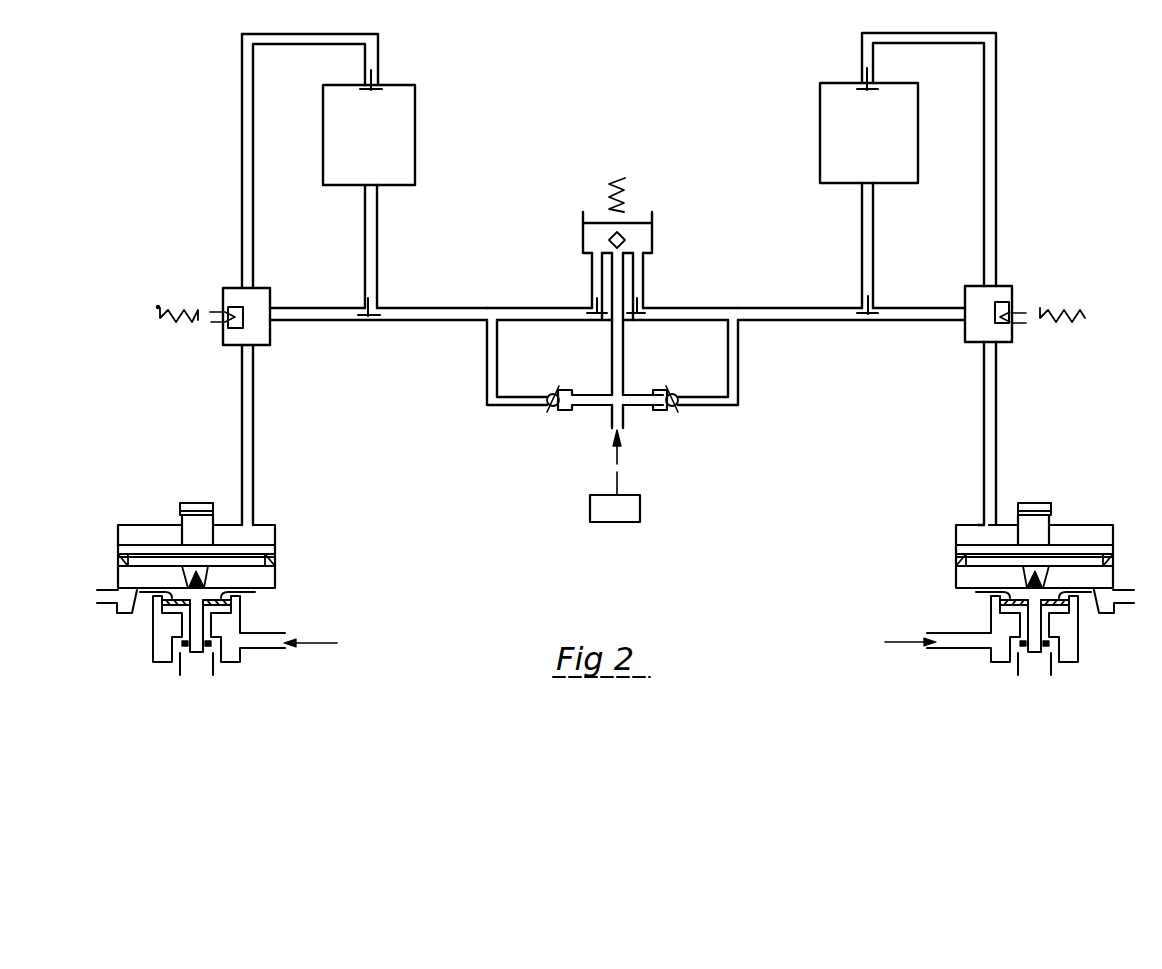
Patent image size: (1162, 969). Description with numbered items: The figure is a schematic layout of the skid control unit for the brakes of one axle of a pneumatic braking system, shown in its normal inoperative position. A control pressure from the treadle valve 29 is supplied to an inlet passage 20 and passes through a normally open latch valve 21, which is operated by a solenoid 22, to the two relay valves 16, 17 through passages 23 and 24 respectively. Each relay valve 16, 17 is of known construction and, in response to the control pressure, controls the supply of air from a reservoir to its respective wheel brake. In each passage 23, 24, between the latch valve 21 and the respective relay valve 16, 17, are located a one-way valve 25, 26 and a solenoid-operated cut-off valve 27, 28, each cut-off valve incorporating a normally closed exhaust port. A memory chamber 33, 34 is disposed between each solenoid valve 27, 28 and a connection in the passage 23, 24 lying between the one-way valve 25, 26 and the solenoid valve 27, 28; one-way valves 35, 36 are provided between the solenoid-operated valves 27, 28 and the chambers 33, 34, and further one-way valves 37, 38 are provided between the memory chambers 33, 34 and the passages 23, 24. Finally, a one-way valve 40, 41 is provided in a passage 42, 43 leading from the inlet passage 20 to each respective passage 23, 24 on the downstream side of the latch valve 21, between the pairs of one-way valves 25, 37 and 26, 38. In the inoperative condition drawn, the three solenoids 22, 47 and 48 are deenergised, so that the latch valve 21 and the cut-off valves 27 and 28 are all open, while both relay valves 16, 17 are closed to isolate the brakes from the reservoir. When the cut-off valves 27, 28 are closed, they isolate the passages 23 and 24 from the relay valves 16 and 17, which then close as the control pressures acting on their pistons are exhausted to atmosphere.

The relay valve 16 is at (286, 573).
The relay valve 17 is at (946, 567).
The inlet passage 20 is at (621, 431).
The latch valve 21 is at (611, 241).
The solenoid 22 is at (608, 191).
The passage 23 is at (418, 315).
The passage 24 is at (827, 312).
The one-way valve 25 is at (595, 303).
The one-way valve 26 is at (640, 303).
The solenoid-operated cut-off valve 27 is at (233, 313).
The solenoid-operated cut-off valve 28 is at (1003, 320).
The treadle valve 29 is at (630, 510).
The memory chamber 33 is at (384, 149).
The memory chamber 34 is at (886, 146).
The one-way valve 35 is at (376, 82).
The one-way valve 36 is at (873, 85).
The one-way valve 37 is at (379, 299).
The one-way valve 38 is at (863, 307).
The one-way valve 40 is at (549, 404).
The one-way valve 41 is at (674, 405).
The passage 42 is at (492, 378).
The passage 43 is at (739, 372).
The solenoid 47 is at (188, 323).
The solenoid 48 is at (1050, 321).